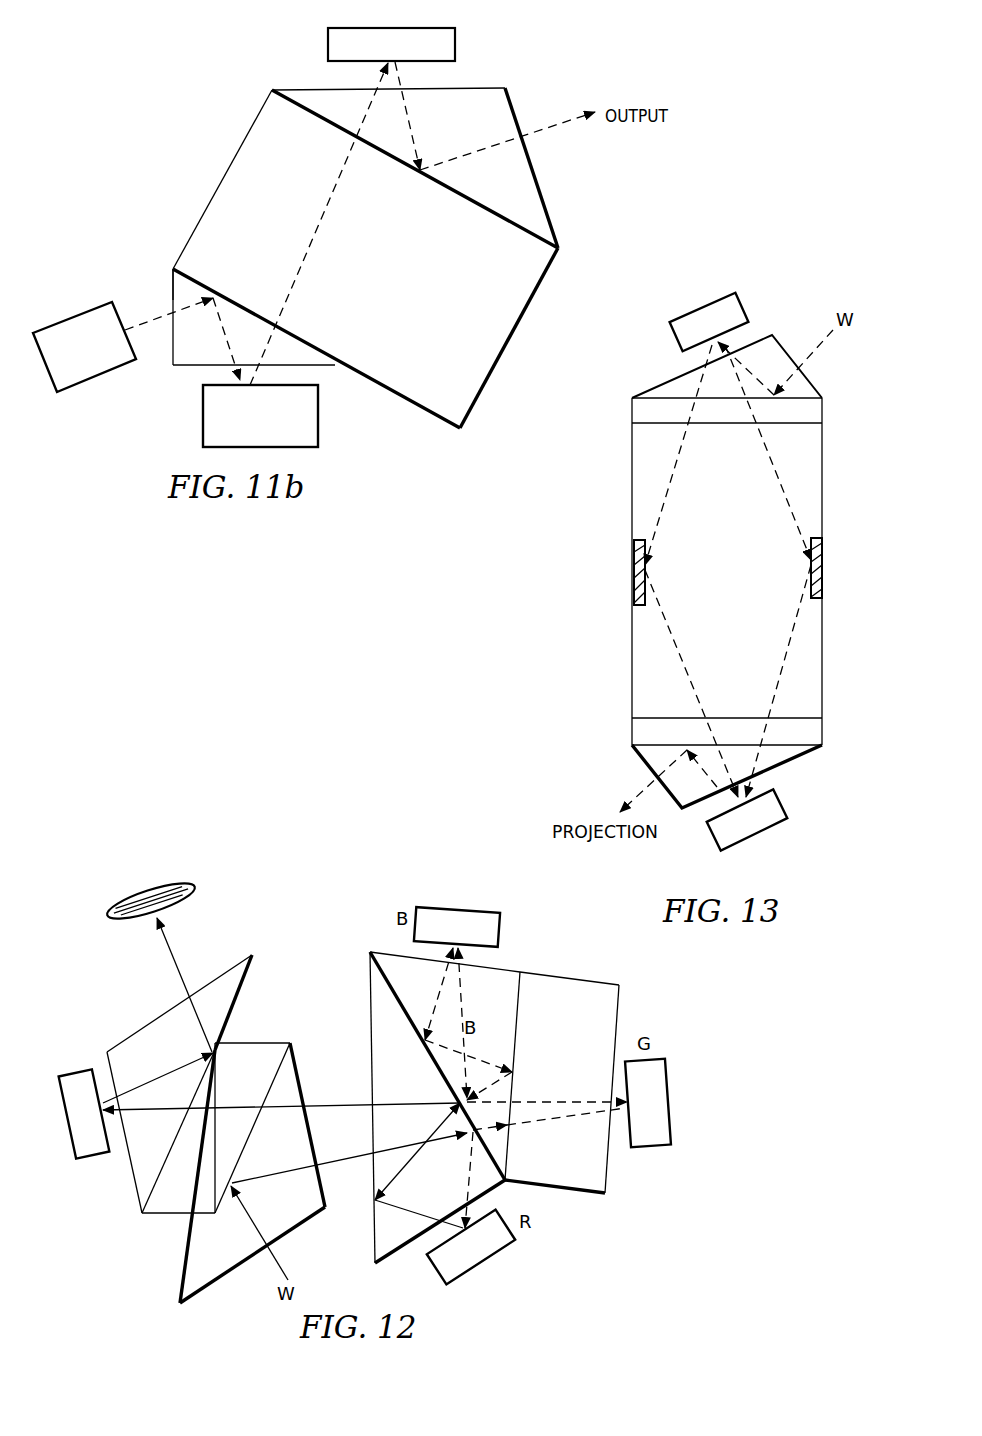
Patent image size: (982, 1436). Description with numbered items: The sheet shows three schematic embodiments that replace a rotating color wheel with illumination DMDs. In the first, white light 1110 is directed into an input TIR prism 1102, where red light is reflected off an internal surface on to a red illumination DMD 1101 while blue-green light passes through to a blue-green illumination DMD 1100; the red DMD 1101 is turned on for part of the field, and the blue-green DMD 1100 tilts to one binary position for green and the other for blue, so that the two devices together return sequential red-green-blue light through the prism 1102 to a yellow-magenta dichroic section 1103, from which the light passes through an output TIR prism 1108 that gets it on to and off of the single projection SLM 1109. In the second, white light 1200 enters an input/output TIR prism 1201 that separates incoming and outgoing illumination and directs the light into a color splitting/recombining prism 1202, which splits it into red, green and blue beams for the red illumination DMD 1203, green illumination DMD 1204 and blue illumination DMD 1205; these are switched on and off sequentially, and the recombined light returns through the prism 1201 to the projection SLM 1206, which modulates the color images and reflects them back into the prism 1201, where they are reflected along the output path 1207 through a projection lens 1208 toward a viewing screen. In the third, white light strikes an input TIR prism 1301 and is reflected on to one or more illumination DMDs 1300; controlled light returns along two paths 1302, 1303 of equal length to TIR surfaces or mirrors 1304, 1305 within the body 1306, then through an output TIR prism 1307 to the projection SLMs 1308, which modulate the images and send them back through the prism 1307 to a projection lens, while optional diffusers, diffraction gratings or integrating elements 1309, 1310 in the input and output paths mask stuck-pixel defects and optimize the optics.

In FIG. 11B, the blue-green illumination DMD 1100 is at (189, 416).
In FIG. 11B, the red illumination DMD 1101 is at (203, 418).
In FIG. 11B, the input TIR prism 1102 is at (176, 293).
In FIG. 11B, the yellow-magenta dichroic section 1103 is at (222, 178).
In FIG. 11B, the output TIR prism 1108 is at (547, 205).
In FIG. 11B, the projection SLM 1109 is at (328, 42).
In FIG. 11B, the white light 1110 is at (68, 318).
In FIG. 12, the white light 1200 is at (283, 1266).
In FIG. 12, the input/output TIR prism 1201 is at (140, 1032).
In FIG. 12, the color splitting/recombining prism 1202 is at (505, 968).
In FIG. 12, the red illumination DMD 1203 is at (486, 1260).
In FIG. 12, the green illumination DMD 1204 is at (668, 1104).
In FIG. 12, the blue illumination DMD 1205 is at (460, 906).
In FIG. 12, the projection SLM 1206 is at (76, 1072).
In FIG. 12, the output light path 1207 is at (175, 956).
In FIG. 12, the projection lens 1208 is at (138, 893).
In FIG. 13, the illumination DMD 1300 is at (698, 306).
In FIG. 13, the input TIR prism 1301 is at (652, 386).
In FIG. 13, the path 1302 is at (678, 478).
In FIG. 13, the path 1303 is at (792, 528).
In FIG. 13, the TIR surface or mirror 1304 is at (634, 570).
In FIG. 13, the TIR surface or mirror 1305 is at (823, 566).
In FIG. 13, the light guide body 1306 is at (822, 668).
In FIG. 13, the output TIR prism 1307 is at (800, 756).
In FIG. 13, the projection SLM 1308 is at (756, 834).
In FIG. 13, the diffuser, diffraction grating, or integrating element 1309 is at (822, 410).
In FIG. 13, the diffuser, diffraction grating, or integrating element 1310 is at (822, 730).